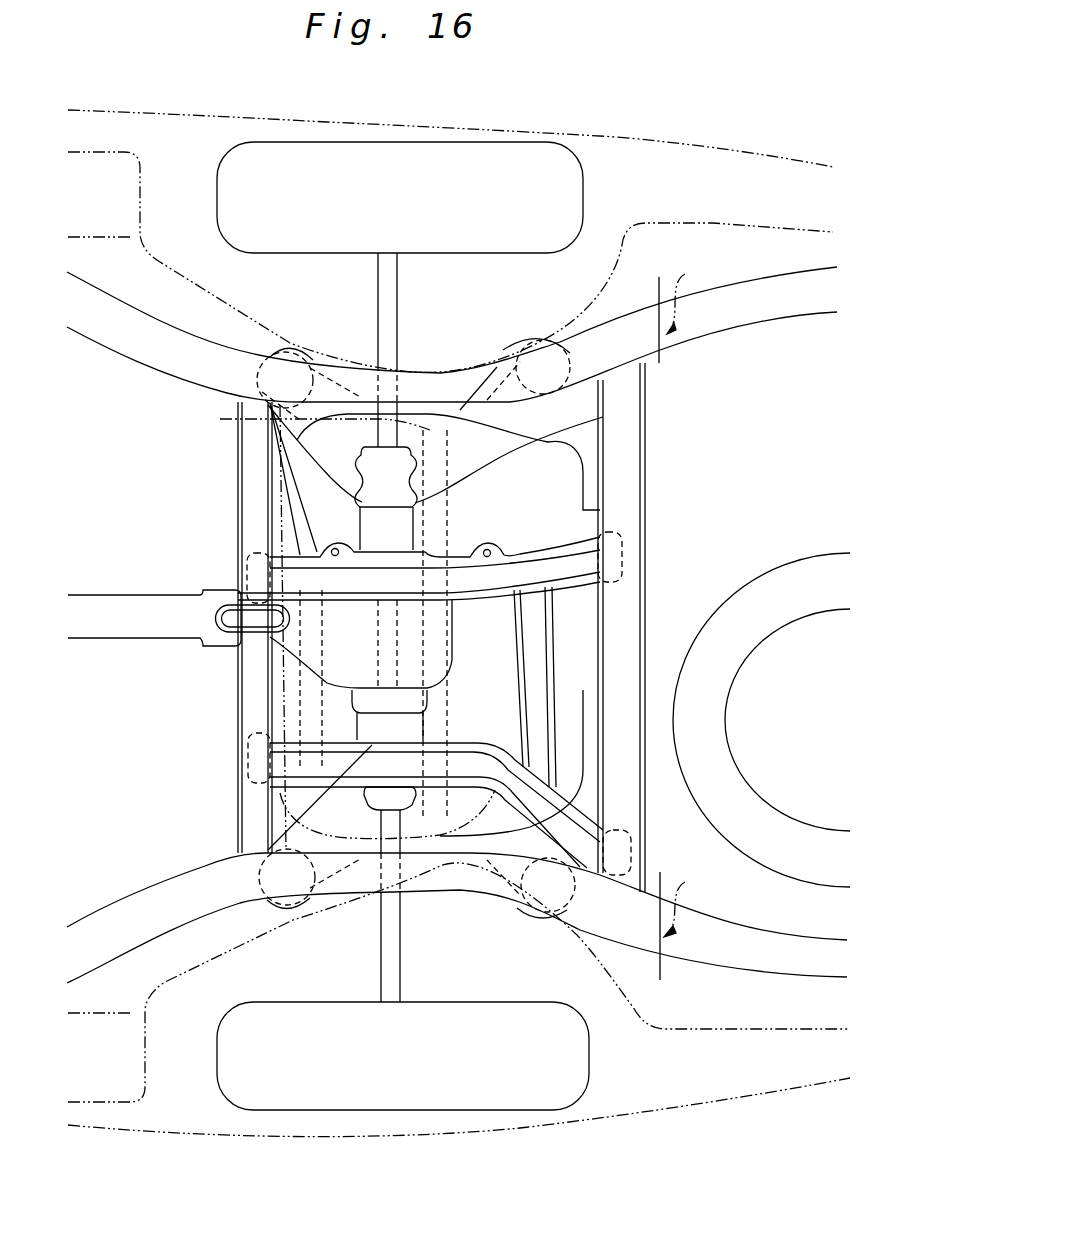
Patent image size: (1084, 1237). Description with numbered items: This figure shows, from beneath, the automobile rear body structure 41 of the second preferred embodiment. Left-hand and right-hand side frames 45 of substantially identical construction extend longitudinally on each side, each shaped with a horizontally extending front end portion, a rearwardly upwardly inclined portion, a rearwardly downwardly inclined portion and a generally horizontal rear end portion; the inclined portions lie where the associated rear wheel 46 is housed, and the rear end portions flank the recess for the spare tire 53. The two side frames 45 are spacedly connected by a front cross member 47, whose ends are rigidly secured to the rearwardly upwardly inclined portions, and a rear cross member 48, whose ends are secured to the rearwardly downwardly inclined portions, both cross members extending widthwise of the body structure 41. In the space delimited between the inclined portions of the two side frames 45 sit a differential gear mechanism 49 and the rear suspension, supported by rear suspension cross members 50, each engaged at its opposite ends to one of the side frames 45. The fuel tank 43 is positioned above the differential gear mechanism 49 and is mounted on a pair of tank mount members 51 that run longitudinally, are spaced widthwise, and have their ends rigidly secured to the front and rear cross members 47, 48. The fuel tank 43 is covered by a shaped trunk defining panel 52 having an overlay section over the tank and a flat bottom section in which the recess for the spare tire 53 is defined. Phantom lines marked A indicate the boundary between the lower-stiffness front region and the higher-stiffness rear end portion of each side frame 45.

The automobile rear body structure 41 is at (750, 142).
The fuel tank 43 is at (600, 512).
The side frame 45 is at (167, 370).
The rear wheel 46 is at (216, 178).
The front cross member 47 is at (240, 705).
The rear cross member 48 is at (638, 606).
The differential gear mechanism 49 is at (322, 646).
The rear suspension cross member 50 is at (603, 417).
The tank mount member 51 is at (528, 557).
The trunk defining panel 52 is at (732, 223).
The spare tire 53 is at (762, 617).